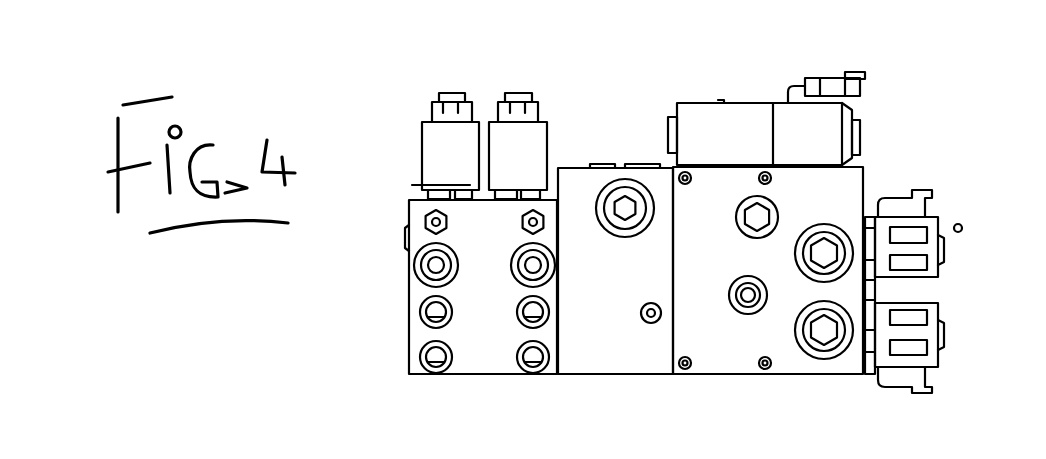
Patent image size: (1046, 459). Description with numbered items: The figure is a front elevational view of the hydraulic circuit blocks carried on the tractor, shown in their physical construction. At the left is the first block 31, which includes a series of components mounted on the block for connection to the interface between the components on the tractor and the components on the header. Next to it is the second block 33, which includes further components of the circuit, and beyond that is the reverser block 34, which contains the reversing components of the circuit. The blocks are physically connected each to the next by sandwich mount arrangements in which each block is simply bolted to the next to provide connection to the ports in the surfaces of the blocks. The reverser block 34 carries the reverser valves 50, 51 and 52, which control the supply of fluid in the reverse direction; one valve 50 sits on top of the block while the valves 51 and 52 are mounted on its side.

The first block 31 is at (418, 294).
The second block 33 is at (585, 190).
The reverser block 34 is at (710, 187).
The reverser valve 50 is at (793, 122).
The reverser valve 51 is at (867, 377).
The reverser valve 52 is at (897, 223).